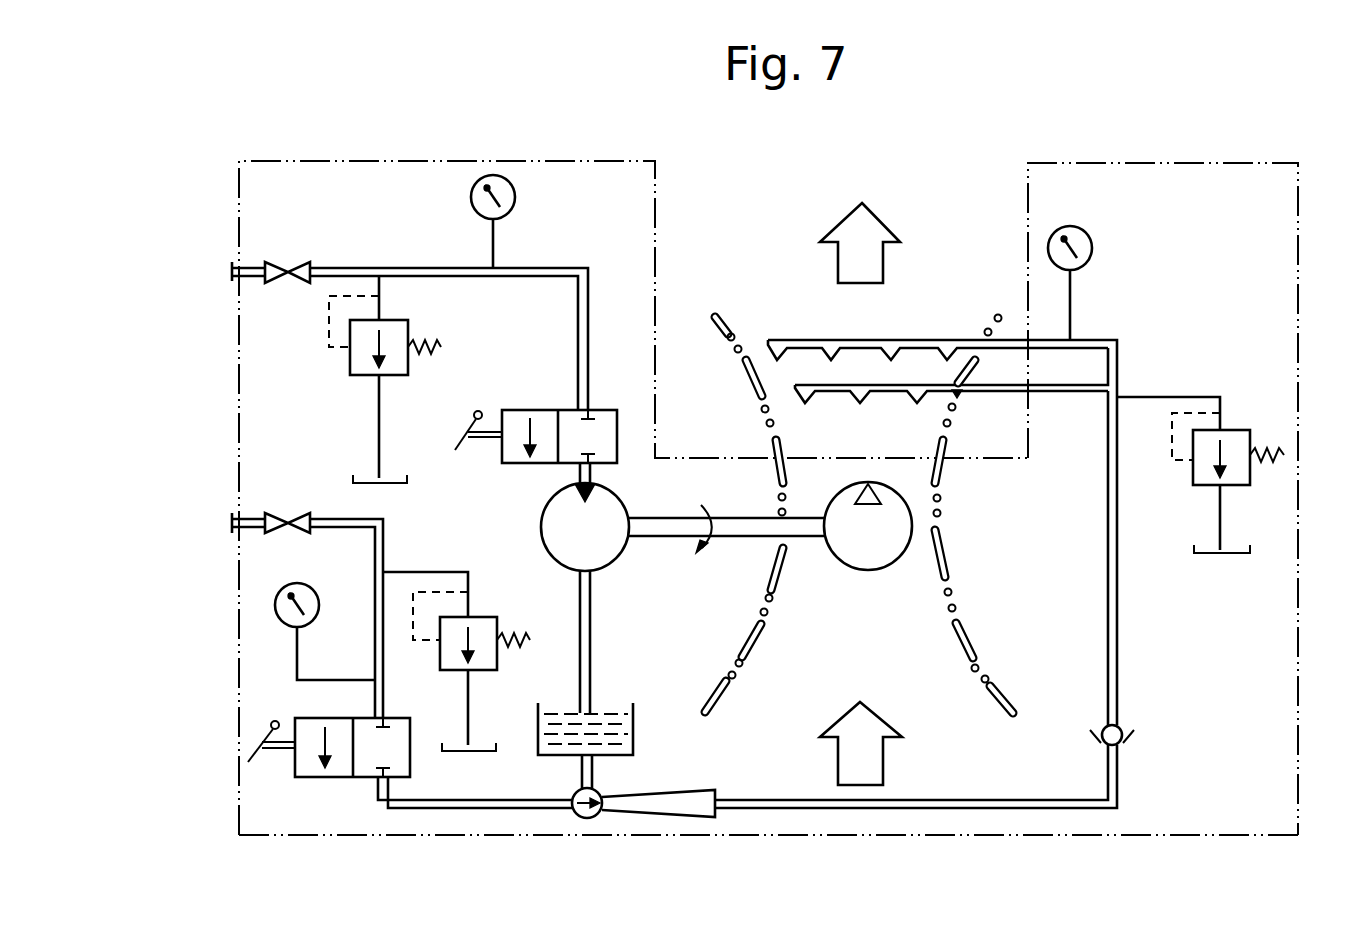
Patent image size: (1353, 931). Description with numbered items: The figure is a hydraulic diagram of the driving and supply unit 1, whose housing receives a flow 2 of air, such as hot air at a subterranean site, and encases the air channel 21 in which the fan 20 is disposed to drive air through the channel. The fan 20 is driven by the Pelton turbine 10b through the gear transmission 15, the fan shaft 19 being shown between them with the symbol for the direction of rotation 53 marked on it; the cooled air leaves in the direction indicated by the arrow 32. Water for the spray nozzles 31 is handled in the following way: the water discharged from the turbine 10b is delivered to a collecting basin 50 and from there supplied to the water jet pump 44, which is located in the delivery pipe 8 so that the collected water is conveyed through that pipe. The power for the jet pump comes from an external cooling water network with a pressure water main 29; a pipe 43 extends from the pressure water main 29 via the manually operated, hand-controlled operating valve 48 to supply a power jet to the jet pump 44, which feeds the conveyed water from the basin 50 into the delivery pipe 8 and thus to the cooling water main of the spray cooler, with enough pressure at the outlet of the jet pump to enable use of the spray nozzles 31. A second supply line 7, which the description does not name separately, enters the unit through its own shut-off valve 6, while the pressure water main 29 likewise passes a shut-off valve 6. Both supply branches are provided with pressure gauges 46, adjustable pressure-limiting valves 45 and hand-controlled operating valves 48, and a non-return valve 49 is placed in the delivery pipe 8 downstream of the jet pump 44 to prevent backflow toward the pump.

The driving and supply unit 1 is at (657, 222).
The flow of air 2 is at (872, 764).
The shut-off valve 6 is at (296, 262).
The inlet line 7 is at (248, 265).
The delivery pipe 8 is at (1106, 616).
The Pelton turbine 10b is at (521, 588).
The gear transmission 15 is at (552, 546).
The fan shaft 19 is at (750, 522).
The fan 20 is at (845, 548).
The air channel 21 is at (945, 557).
The pressure water main 29 is at (248, 516).
The spray nozzles 31 is at (775, 357).
The arrow 32 is at (860, 226).
The pipe 43 is at (542, 811).
The water jet pump 44 is at (632, 813).
The adjustable pressure-limiting valve 45 is at (391, 330).
The pressure gauge 46 is at (516, 196).
The hand-controlled operating valve 48 is at (550, 418).
The non-return valve 49 is at (1128, 735).
The collecting basin 50 is at (637, 711).
The direction of rotation 53 is at (705, 512).